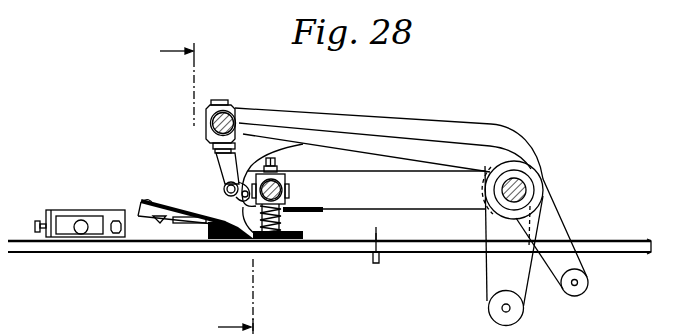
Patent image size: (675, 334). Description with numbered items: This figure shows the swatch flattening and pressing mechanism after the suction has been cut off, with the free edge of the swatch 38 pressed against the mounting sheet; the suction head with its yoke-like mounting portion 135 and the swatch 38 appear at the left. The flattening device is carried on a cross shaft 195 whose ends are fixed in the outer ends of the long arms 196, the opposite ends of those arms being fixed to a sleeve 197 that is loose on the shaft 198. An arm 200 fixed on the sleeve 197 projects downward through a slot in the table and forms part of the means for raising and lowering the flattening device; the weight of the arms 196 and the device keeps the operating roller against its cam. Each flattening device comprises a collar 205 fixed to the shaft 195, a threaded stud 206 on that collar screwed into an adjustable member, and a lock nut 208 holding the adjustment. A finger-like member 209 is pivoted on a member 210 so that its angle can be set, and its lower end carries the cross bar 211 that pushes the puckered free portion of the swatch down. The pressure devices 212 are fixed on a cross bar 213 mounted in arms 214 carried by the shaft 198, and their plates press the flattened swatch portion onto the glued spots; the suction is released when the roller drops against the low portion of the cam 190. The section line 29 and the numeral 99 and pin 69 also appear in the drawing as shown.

The section line 29- 29 is at (206, 188).
The pressure devices 212 is at (632, 238).
The yoke-like mounting portion 135 is at (63, 209).
The swatch 38 is at (164, 210).
The ramp lip 99 is at (147, 202).
The cross bar 211 is at (240, 240).
The collar 205 is at (225, 104).
The cross shaft 195 is at (203, 120).
The threaded stud 206 is at (212, 137).
The lock nut 208 is at (212, 150).
The cam 190 is at (208, 169).
The pivot member 210 is at (213, 188).
The arms 196 is at (350, 125).
The arms 214 is at (408, 198).
The finger-like member 209 is at (268, 157).
The cross bar 213 is at (284, 206).
The pin 69 is at (373, 233).
The shaft 198 is at (530, 170).
The sleeve 197 is at (531, 192).
The arm 200 is at (484, 270).